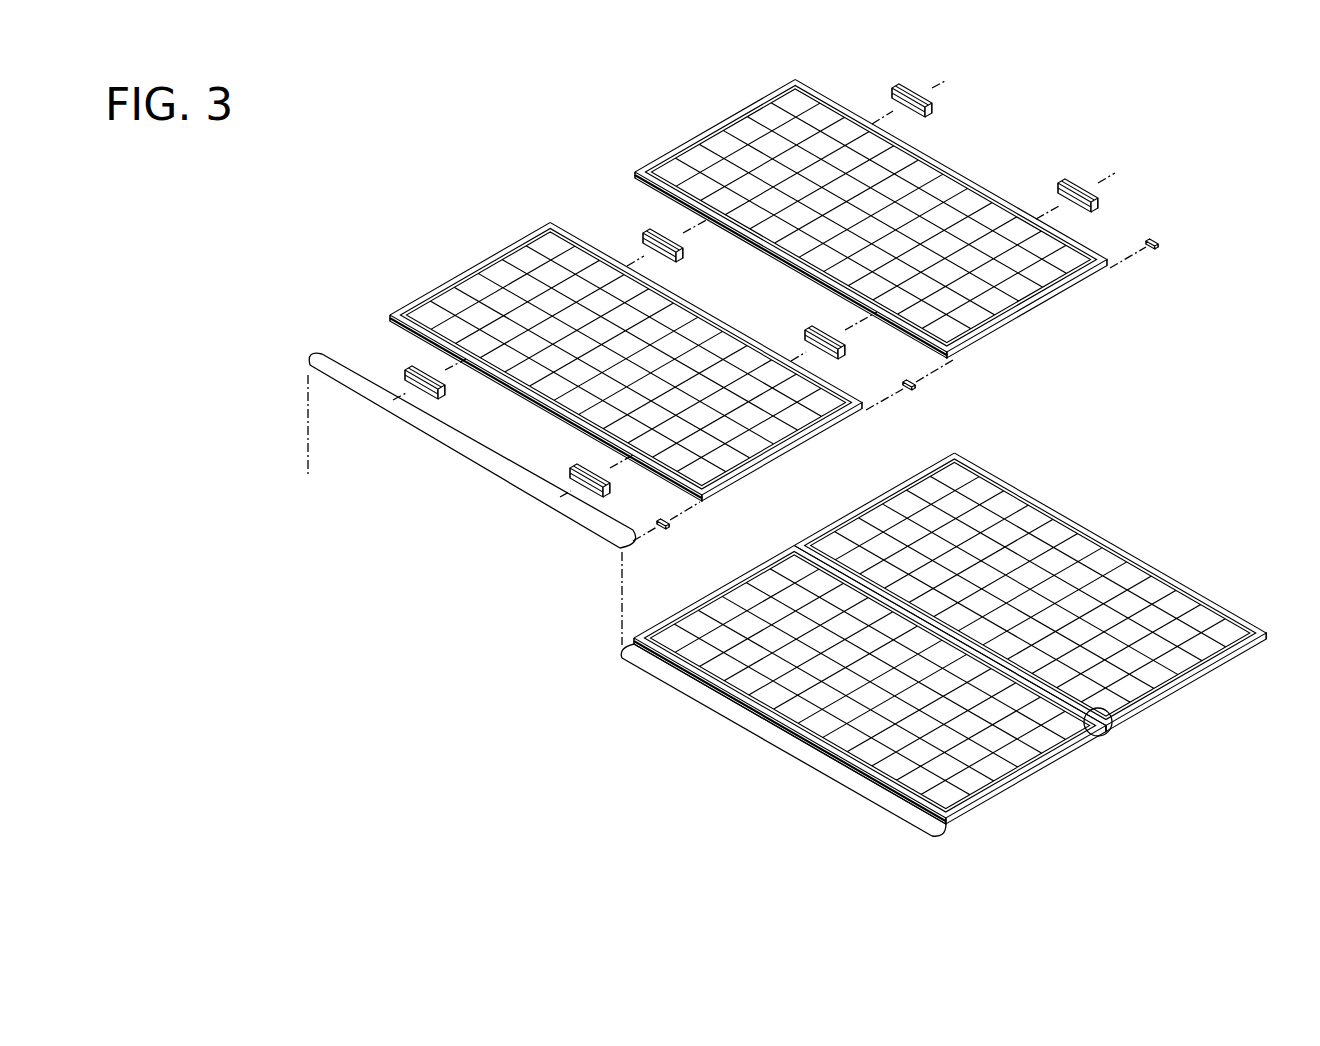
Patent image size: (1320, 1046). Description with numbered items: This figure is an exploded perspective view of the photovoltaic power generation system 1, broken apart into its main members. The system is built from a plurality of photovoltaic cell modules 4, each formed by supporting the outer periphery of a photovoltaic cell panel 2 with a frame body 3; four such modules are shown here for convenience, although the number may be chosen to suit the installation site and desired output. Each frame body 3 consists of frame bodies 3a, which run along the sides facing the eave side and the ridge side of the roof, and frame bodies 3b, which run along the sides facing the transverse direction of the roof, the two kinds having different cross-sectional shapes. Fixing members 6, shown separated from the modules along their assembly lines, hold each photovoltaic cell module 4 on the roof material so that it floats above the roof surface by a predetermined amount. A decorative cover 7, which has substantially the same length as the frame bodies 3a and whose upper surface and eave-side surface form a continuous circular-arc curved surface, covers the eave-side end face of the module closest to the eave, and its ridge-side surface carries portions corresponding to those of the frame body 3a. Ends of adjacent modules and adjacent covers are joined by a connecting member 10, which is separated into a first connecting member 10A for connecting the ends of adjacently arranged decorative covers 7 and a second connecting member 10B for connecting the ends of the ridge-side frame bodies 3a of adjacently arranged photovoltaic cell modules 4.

The photovoltaic power generation system 1 is at (1226, 176).
The photovoltaic cell panel 2 is at (818, 120).
The frame body 3 is at (776, 460).
The frame body 3a is at (957, 173).
The frame body 3b is at (678, 147).
The photovoltaic cell module 4 is at (710, 117).
The fixing member 6 is at (924, 87).
The decorative cover 7 is at (462, 460).
The connecting member 10 is at (947, 392).
The first connecting member 10A is at (676, 523).
The second connecting member 10B is at (923, 388).